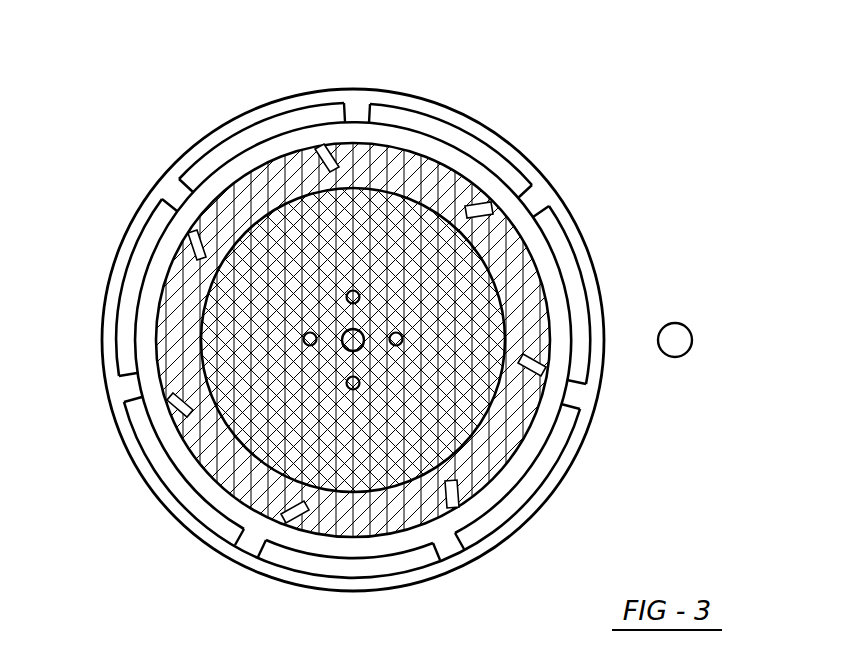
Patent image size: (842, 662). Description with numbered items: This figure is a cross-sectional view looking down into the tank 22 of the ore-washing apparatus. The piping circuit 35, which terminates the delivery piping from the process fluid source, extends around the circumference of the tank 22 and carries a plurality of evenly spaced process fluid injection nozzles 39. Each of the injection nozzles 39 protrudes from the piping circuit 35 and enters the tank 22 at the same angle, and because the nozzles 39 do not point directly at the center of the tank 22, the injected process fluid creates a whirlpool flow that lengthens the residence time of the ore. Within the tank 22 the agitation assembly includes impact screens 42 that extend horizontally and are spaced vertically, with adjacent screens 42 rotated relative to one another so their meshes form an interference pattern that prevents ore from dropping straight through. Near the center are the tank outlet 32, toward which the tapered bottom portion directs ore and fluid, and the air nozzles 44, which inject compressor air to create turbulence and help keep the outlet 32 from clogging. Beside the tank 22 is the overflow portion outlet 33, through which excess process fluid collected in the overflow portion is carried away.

The piping circuit 35 is at (430, 108).
The tank 22 is at (455, 157).
The impact screens 42 is at (485, 258).
The overflow portion outlet 33 is at (684, 323).
The nozzles 44 is at (358, 385).
The tank outlet 32 is at (342, 350).
The process fluid injection nozzles 39 is at (456, 491).